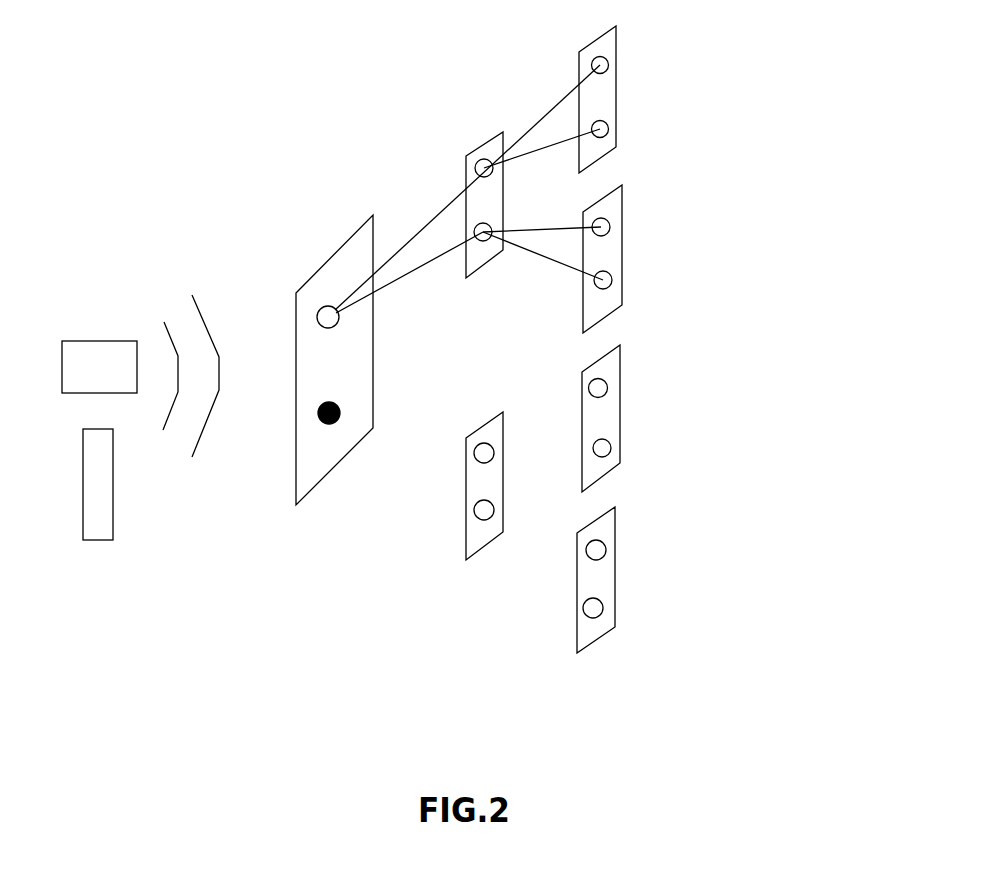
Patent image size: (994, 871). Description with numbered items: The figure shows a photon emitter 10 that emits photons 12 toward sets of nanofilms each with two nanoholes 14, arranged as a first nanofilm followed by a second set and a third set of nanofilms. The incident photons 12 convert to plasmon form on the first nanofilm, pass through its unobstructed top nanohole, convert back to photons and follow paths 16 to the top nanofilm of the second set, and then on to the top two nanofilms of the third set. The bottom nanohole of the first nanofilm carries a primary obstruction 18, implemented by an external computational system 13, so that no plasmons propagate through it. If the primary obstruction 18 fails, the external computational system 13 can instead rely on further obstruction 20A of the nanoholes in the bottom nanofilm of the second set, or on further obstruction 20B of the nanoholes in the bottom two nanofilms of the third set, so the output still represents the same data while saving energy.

The photon emitter 10 is at (86, 312).
The photons emitted from the photon emitter 12 is at (177, 265).
The external computational system 13 is at (93, 556).
The sets of nanofilms each with two nanoholes 14 is at (345, 218).
The paths photons and plasmons take through the system 16 is at (426, 198).
The primary obstruction 18 is at (309, 439).
The further obstruction 20A is at (459, 477).
The further obstruction 20B is at (627, 407).